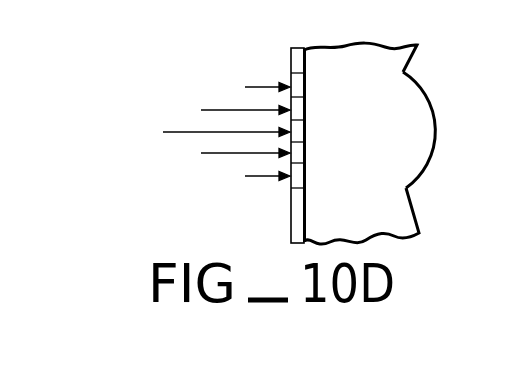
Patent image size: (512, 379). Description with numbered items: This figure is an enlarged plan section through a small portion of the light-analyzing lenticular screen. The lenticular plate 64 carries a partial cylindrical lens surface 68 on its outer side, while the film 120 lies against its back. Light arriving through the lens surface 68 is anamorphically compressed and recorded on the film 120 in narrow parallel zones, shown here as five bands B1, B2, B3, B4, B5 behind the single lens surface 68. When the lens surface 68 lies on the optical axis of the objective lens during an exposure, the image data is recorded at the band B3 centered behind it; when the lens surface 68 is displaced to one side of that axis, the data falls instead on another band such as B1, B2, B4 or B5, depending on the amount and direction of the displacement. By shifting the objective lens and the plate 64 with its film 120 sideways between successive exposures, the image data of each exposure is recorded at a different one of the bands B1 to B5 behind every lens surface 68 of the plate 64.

The film 120 is at (299, 48).
The lenticular plate 64 is at (376, 117).
The partial cylindrical lens surface 68 is at (437, 127).
The band B1 is at (251, 87).
The band B2 is at (227, 110).
The band B3 is at (208, 133).
The band B4 is at (227, 153).
The band B5 is at (247, 176).